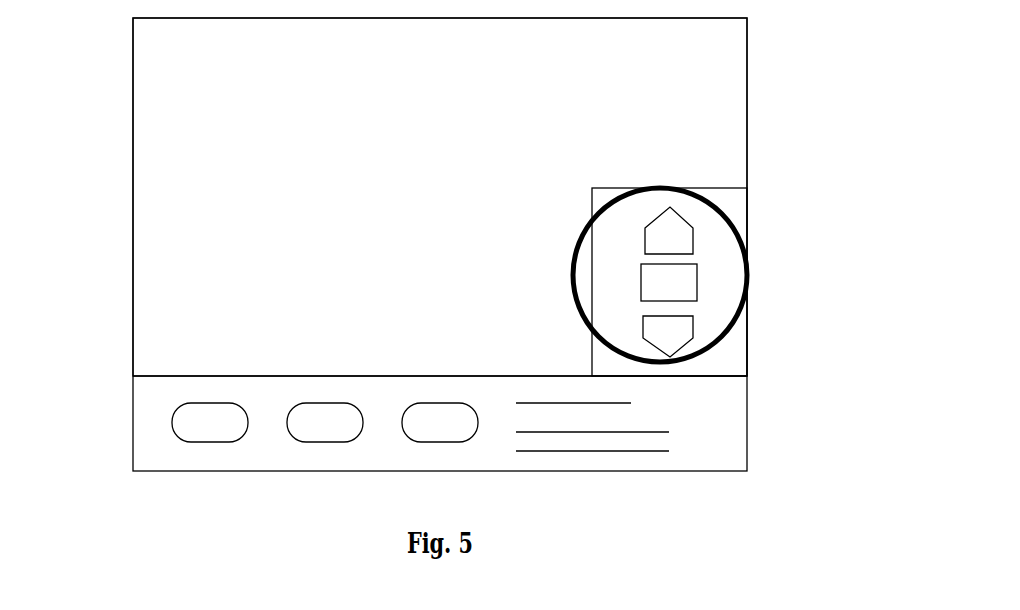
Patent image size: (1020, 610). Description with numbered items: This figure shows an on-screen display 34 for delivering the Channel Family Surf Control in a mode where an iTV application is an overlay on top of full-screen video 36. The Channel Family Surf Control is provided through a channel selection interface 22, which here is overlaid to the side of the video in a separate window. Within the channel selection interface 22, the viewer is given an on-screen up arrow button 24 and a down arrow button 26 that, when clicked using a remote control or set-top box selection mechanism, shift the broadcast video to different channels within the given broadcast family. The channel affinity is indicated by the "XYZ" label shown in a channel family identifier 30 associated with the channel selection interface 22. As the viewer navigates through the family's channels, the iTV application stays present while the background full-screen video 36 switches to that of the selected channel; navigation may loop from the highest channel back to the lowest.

The channel selection interface 22 is at (722, 211).
The up arrow button 24 is at (678, 217).
The down arrow button 26 is at (690, 337).
The channel family identifier 30 is at (698, 282).
The on-screen display 34 is at (411, 197).
The full-screen video 36 is at (150, 228).